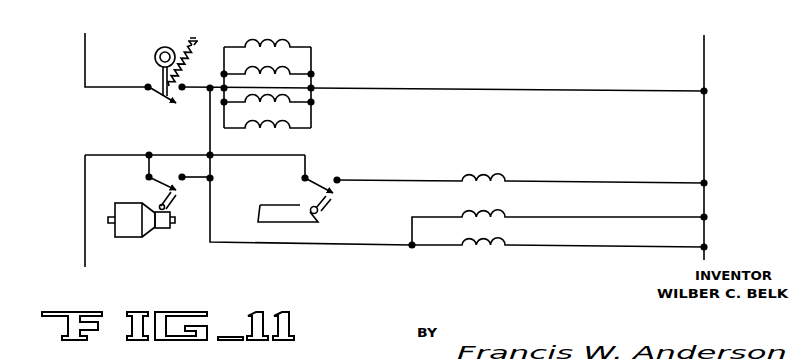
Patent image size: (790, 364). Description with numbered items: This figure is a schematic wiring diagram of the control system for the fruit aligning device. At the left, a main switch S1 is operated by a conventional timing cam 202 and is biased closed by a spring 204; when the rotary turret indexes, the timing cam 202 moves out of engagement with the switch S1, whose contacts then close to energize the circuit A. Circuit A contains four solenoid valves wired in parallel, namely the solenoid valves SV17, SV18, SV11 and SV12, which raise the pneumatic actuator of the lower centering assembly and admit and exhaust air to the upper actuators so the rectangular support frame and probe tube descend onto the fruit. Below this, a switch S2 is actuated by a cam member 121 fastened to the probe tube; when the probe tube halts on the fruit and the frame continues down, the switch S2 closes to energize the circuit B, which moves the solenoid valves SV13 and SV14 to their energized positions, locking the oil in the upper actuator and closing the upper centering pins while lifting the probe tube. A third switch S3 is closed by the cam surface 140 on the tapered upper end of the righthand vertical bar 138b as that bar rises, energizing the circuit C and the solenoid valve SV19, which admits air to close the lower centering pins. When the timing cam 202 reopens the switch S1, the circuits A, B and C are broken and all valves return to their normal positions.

The timing cam 202 is at (156, 54).
The spring 204 is at (195, 50).
The main switch S1 is at (157, 97).
The solenoid valve SV17 is at (288, 47).
The solenoid valve SV18 is at (288, 74).
The solenoid valve SV11 is at (290, 102).
The solenoid valve SV12 is at (290, 128).
The circuit A is at (485, 70).
The circuit C is at (517, 167).
The solenoid valve SV19 is at (470, 178).
The solenoid valve SV13 is at (470, 212).
The solenoid valve SV14 is at (497, 244).
The switch S2 is at (148, 180).
The switch S3 is at (300, 180).
The cam surface 140 is at (302, 205).
The cam member 121 is at (150, 228).
The righthand vertical bar 138b is at (287, 222).
The circuit B is at (388, 253).